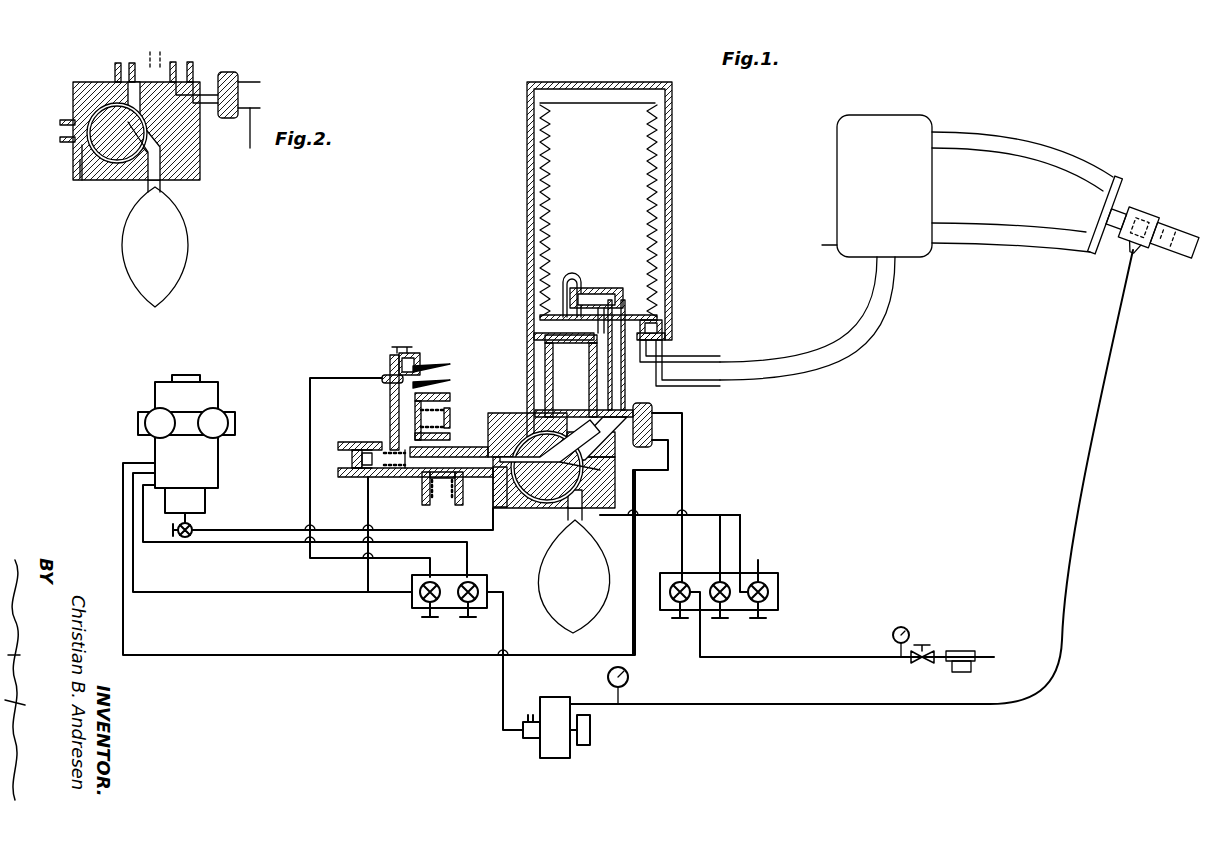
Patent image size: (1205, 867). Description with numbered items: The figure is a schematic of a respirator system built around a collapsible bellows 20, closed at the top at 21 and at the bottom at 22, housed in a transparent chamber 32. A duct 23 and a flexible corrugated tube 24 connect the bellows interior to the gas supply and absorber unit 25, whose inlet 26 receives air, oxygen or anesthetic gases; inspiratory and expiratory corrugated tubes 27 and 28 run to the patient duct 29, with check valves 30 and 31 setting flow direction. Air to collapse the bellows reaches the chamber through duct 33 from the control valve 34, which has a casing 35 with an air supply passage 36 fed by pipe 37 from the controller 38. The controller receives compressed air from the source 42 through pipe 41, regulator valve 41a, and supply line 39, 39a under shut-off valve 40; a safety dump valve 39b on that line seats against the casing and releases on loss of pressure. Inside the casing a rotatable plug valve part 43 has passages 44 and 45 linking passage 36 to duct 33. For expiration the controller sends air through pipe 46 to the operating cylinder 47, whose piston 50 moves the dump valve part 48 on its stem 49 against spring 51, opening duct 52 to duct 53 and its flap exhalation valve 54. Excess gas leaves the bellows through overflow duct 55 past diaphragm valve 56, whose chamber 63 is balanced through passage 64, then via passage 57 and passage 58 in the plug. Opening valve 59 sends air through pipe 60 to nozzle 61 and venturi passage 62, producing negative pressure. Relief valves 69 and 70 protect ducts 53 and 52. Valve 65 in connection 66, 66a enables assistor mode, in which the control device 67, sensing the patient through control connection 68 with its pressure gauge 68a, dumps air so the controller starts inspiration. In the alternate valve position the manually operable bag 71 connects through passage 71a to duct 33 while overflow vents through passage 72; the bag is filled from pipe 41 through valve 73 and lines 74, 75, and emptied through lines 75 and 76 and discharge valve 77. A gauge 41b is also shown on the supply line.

In FIG. 1, the bellows 20 is at (540, 135).
In FIG. 1, the bellows top closure 21 is at (590, 103).
In FIG. 1, the bellows bottom closure 22 is at (655, 331).
In FIG. 1, the duct 23 is at (708, 380).
In FIG. 1, the flexible corrugated tube 24 is at (845, 365).
In FIG. 1, the gas supply and absorber unit 25 is at (837, 160).
In FIG. 1, the inlet 26 is at (828, 243).
In FIG. 1, the inspiratory corrugated tube 27 is at (1000, 245).
In FIG. 1, the expiratory corrugated tube 28 is at (980, 135).
In FIG. 1, the patient duct 29 is at (1160, 222).
In FIG. 1, the check valve 30 is at (1079, 198).
In FIG. 1, the check valve 31 is at (1110, 186).
In FIG. 1, the chamber 32 is at (540, 178).
In FIG. 2, the duct 33 is at (124, 63).
In FIG. 1, the duct 33 is at (527, 345).
In FIG. 1, the control valve 34 is at (520, 515).
In FIG. 2, the valve casing 35 is at (200, 168).
In FIG. 1, the valve casing 35 is at (520, 508).
In FIG. 2, the air supply passage 36 is at (78, 158).
In FIG. 1, the air supply passage 36 is at (493, 490).
In FIG. 1, the pipe 37 is at (230, 530).
In FIG. 1, the controller 38 is at (212, 375).
In FIG. 2, the supply line 39 is at (264, 136).
In FIG. 1, the supply line 39 is at (262, 655).
In FIG. 2, the supply line 39a is at (255, 70).
In FIG. 1, the supply line 39a is at (682, 455).
In FIG. 2, the safety dump valve 39b is at (260, 95).
In FIG. 1, the safety dump valve 39b is at (665, 426).
In FIG. 1, the shut-off valve 40 is at (684, 605).
In FIG. 1, the pipe 41 is at (815, 657).
In FIG. 1, the regulator valve 41a is at (912, 663).
In FIG. 1, the pressure gauge 41b is at (902, 627).
In FIG. 1, the source 42 is at (982, 651).
In FIG. 2, the rotatable plug valve part 43 is at (85, 180).
In FIG. 1, the rotatable plug valve part 43 is at (595, 465).
In FIG. 2, the passage 44 is at (112, 108).
In FIG. 1, the passage 44 is at (535, 430).
In FIG. 1, the passage 45 is at (560, 412).
In FIG. 1, the pipe 46 is at (208, 593).
In FIG. 1, the operating cylinder 47 is at (360, 470).
In FIG. 1, the dump valve part 48 is at (404, 450).
In FIG. 1, the stem 49 is at (365, 455).
In FIG. 1, the piston 50 is at (355, 455).
In FIG. 1, the spring 51 is at (390, 470).
In FIG. 2, the duct 52 is at (60, 128).
In FIG. 1, the duct 52 is at (472, 447).
In FIG. 1, the duct 53 is at (392, 390).
In FIG. 1, the exhalation valve 54 is at (404, 347).
In FIG. 2, the overflow duct 55 is at (186, 62).
In FIG. 1, the overflow duct 55 is at (600, 355).
In FIG. 1, the diaphragm valve 56 is at (612, 290).
In FIG. 2, the passage 57 is at (200, 110).
In FIG. 1, the passage 57 is at (600, 405).
In FIG. 2, the passage 58 is at (138, 150).
In FIG. 1, the passage 58 is at (572, 440).
In FIG. 1, the valve 59 is at (418, 605).
In FIG. 1, the pipe 60 is at (328, 558).
In FIG. 1, the nozzle 61 is at (388, 375).
In FIG. 1, the venturi passage 62 is at (438, 368).
In FIG. 1, the chamber 63 is at (597, 290).
In FIG. 1, the equalizing passage 64 is at (571, 275).
In FIG. 1, the valve 65 is at (487, 580).
In FIG. 1, the connection 66 is at (210, 543).
In FIG. 1, the connection 66a is at (503, 632).
In FIG. 1, the control device 67 is at (550, 758).
In FIG. 1, the control connection 68 is at (738, 704).
In FIG. 1, the pressure gauge 68a is at (630, 677).
In FIG. 1, the negative pressure relief valve 69 is at (450, 412).
In FIG. 1, the positive pressure relief valve 70 is at (440, 500).
In FIG. 2, the manually operable bag 71 is at (196, 243).
In FIG. 1, the manually operable bag 71 is at (582, 625).
In FIG. 2, the passage 71a is at (178, 185).
In FIG. 1, the passage 71a is at (585, 490).
In FIG. 2, the passage 72 is at (159, 45).
In FIG. 1, the passage 72 is at (520, 412).
In FIG. 1, the valve 73 is at (728, 603).
In FIG. 1, the line 74 is at (720, 548).
In FIG. 1, the line 75 is at (718, 515).
In FIG. 1, the line 76 is at (745, 550).
In FIG. 1, the discharge valve 77 is at (768, 592).